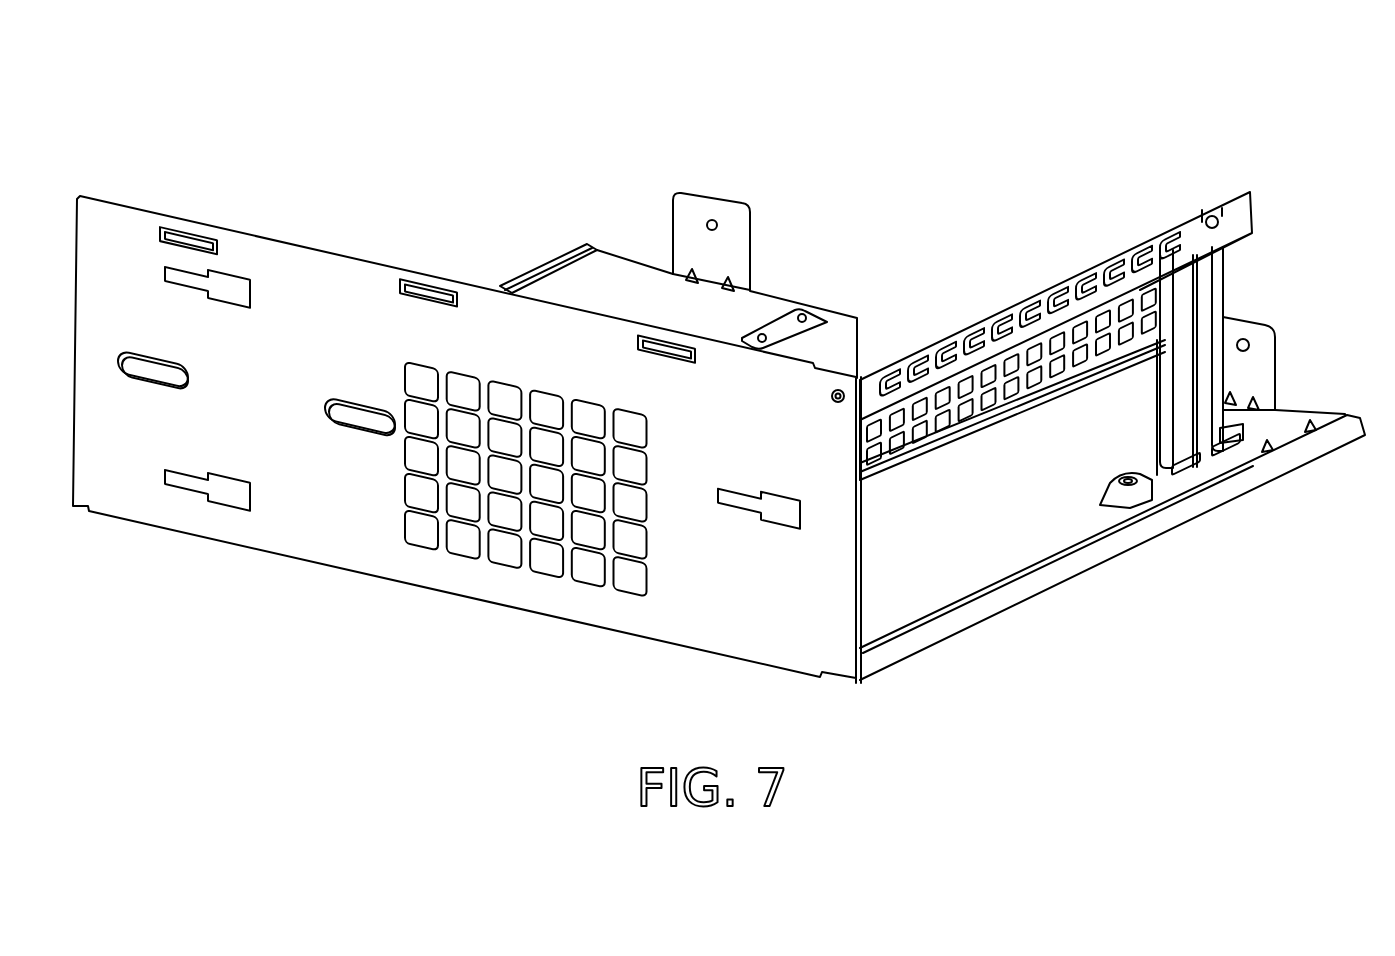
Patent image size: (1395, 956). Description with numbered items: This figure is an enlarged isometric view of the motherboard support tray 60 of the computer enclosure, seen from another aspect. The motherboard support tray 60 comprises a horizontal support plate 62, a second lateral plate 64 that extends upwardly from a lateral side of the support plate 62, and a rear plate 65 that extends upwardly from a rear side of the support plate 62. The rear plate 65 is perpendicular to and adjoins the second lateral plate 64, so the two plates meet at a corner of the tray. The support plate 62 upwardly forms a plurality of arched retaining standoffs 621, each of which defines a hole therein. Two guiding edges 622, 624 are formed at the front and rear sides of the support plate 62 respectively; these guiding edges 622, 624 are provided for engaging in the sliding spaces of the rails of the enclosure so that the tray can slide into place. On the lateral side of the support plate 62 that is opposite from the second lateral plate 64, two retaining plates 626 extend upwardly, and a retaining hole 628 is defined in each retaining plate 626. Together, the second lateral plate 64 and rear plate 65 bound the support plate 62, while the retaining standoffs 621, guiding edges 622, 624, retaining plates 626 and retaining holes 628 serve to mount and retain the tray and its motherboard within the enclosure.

The motherboard support tray 60 is at (734, 397).
The horizontal support plate 62 is at (734, 221).
The second lateral plate 64 is at (817, 605).
The rear plate 65 is at (1168, 298).
The arched retaining standoff 621 is at (1118, 493).
The guiding edge 622 is at (577, 250).
The guiding edge 624 is at (1342, 433).
The retaining plate 626 is at (766, 177).
The retaining hole 628 is at (708, 222).